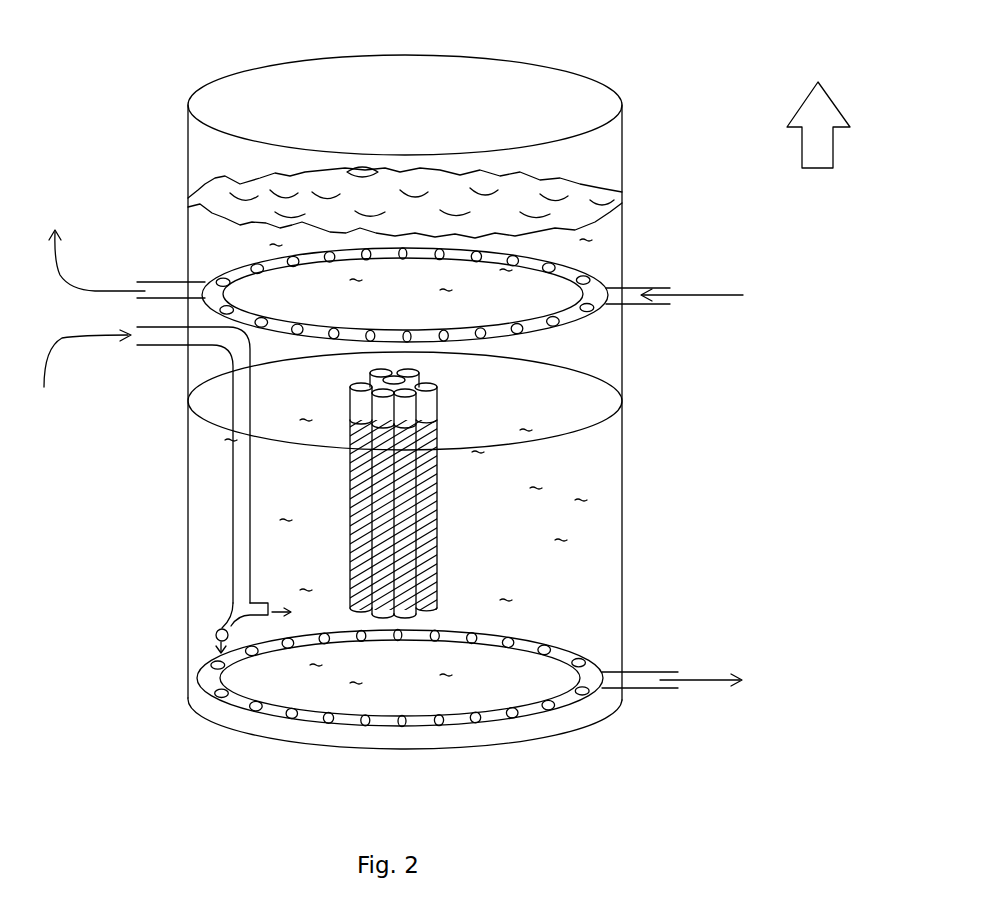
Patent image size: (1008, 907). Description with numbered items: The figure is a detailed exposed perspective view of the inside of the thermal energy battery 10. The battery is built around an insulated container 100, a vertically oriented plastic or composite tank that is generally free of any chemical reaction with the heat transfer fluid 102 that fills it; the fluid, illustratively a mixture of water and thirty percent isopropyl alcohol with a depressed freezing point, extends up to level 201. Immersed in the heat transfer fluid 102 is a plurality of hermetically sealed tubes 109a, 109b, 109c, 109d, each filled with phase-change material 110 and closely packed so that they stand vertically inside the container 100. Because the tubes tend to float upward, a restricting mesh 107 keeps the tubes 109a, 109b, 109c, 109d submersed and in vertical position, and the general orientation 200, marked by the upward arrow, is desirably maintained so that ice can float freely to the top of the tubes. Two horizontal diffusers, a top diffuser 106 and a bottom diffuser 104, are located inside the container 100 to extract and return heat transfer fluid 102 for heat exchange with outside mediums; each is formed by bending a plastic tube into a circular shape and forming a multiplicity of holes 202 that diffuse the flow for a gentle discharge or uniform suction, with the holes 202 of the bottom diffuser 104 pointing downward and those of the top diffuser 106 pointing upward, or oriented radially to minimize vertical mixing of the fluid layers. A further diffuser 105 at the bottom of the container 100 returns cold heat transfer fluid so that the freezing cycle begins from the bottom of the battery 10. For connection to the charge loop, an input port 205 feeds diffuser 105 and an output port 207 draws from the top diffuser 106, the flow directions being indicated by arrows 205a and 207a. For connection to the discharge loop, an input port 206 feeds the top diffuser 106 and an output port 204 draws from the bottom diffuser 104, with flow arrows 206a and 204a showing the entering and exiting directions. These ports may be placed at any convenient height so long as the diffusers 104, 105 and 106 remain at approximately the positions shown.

The thermal energy battery 10 is at (466, 377).
The insulated container 100 is at (623, 472).
The heat transfer fluid 102 is at (578, 502).
The bottom diffuser 104 is at (261, 712).
The diffuser 105 is at (217, 629).
The top diffuser 106 is at (601, 307).
The restricting mesh 107 is at (601, 421).
The tube 109a is at (352, 484).
The tube 109b is at (352, 537).
The tube 109c is at (437, 487).
The tube 109d is at (437, 533).
The phase-change material 110 is at (405, 515).
The general orientation 200 is at (828, 142).
The level 201 is at (627, 199).
The holes 202 is at (503, 717).
The output port 204 is at (630, 672).
The outlet flow direction 204a is at (715, 683).
The input port 205 is at (161, 346).
The feed flow direction 205a is at (88, 341).
The input port 206 is at (632, 282).
The inlet flow direction 206a is at (723, 297).
The output port 207 is at (177, 280).
The outlet flow direction 207a is at (98, 290).